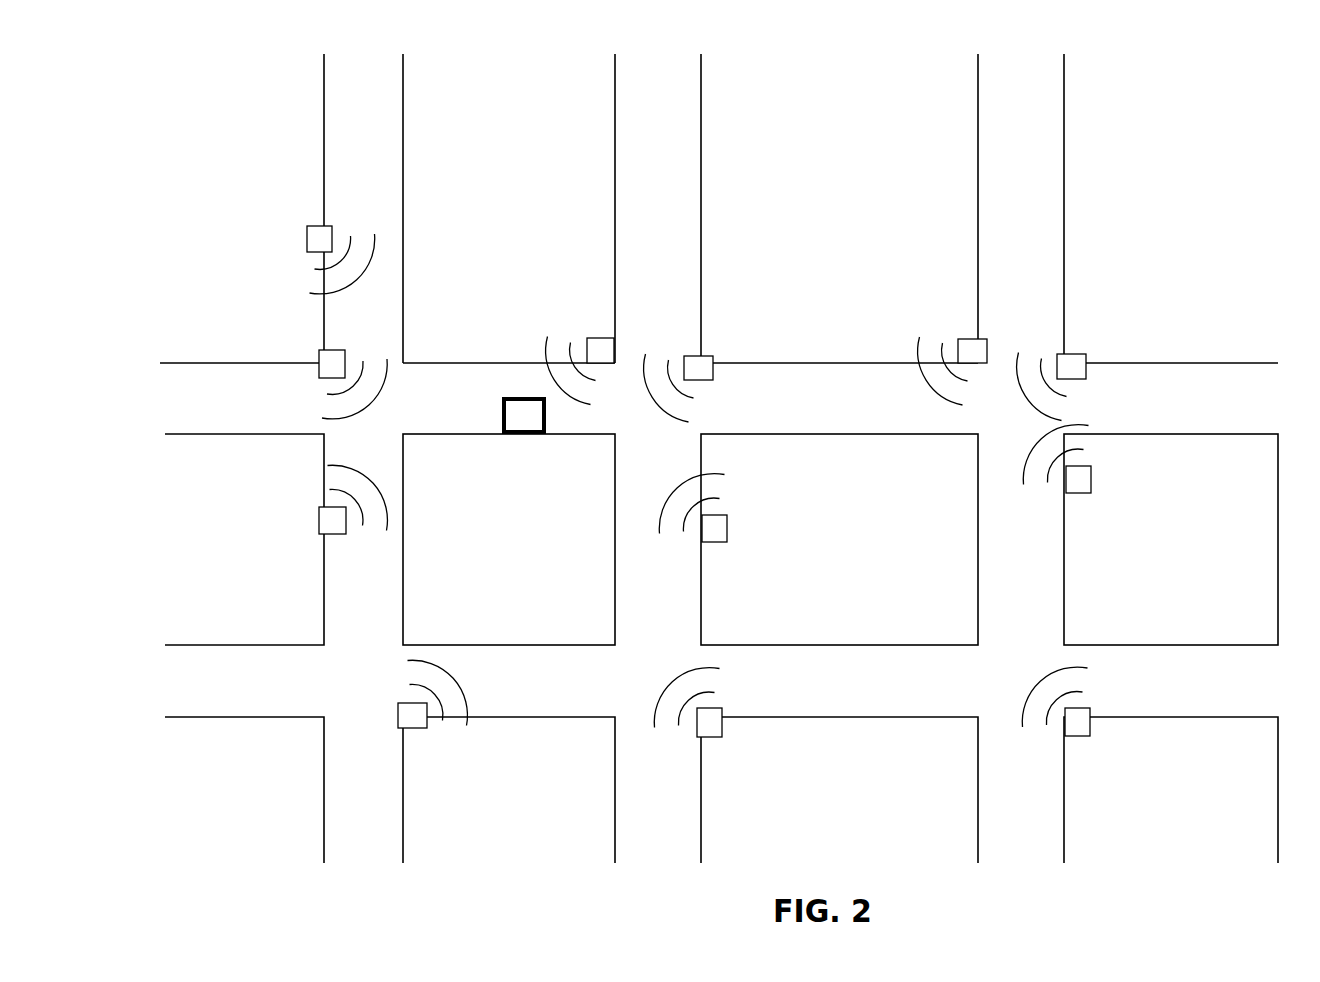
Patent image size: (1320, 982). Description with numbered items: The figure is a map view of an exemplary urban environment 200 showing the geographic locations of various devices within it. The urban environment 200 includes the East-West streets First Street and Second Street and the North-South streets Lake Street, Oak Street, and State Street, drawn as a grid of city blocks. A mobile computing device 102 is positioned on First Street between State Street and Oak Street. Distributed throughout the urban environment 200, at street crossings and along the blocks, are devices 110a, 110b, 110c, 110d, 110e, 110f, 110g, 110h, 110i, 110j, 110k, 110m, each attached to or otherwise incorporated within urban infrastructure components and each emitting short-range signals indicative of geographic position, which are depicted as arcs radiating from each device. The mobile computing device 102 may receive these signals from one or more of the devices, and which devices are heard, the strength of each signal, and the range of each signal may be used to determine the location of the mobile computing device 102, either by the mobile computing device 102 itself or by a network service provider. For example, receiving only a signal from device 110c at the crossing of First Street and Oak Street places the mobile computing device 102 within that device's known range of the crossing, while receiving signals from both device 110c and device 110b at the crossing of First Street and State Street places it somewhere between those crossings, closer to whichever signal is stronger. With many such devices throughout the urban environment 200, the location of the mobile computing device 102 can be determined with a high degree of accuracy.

The urban environment 200 is at (823, 24).
The mobile computing device 102 is at (512, 416).
The device 110a is at (318, 242).
The device 110b is at (331, 361).
The device 110c is at (598, 347).
The device 110d is at (706, 364).
The device 110e is at (970, 348).
The device 110f is at (1074, 364).
The device 110g is at (330, 521).
The device 110h is at (718, 530).
The device 110i is at (1080, 481).
The device 110j is at (416, 718).
The device 110k is at (714, 725).
The device 110m is at (1082, 725).